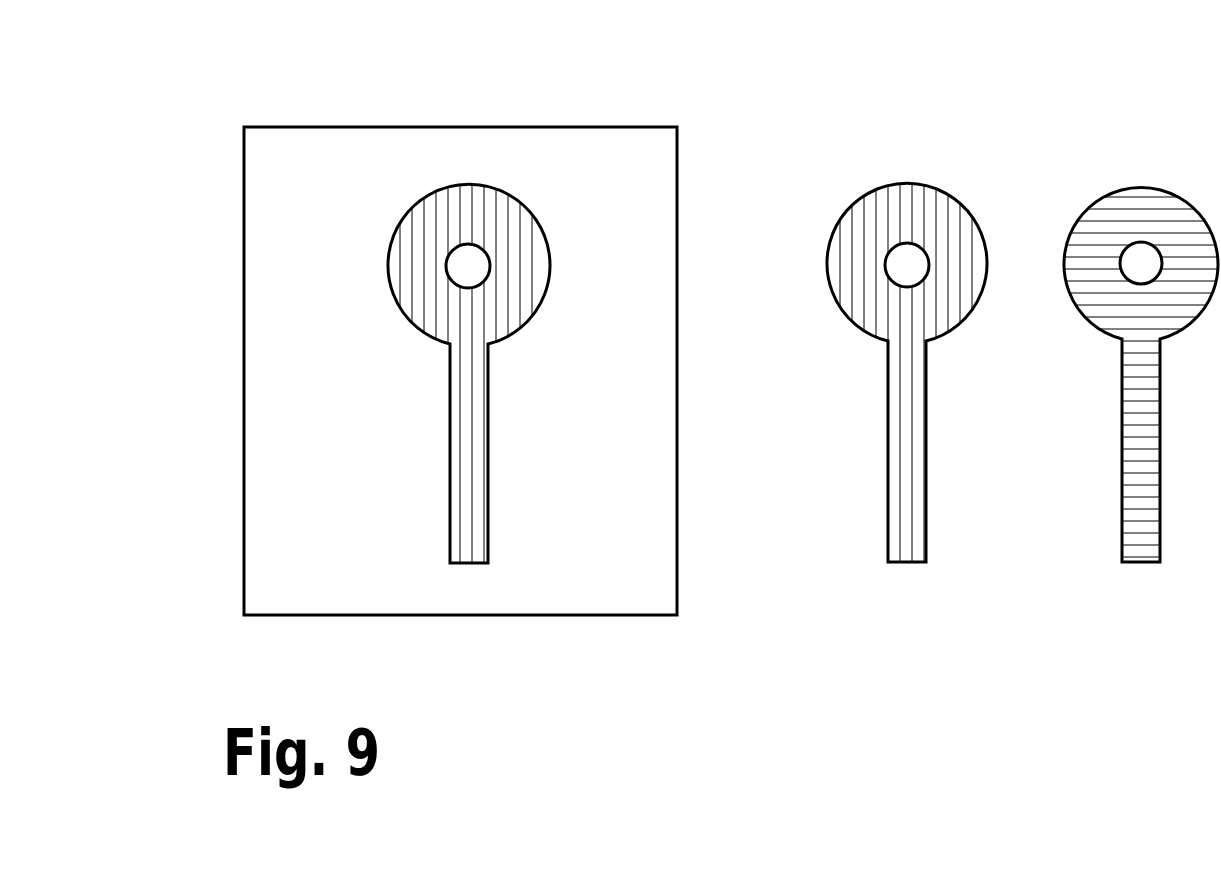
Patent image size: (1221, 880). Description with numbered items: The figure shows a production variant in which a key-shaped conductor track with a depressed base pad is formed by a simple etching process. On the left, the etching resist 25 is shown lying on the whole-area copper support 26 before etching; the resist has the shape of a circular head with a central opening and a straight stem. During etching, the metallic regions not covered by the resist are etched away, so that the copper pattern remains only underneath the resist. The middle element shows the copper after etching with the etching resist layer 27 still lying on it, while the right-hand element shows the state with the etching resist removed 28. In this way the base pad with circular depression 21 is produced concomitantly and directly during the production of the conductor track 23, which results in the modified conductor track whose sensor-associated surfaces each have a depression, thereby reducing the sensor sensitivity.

The base pad with circular depression 21 is at (987, 307).
The conductor track 23 is at (1123, 437).
The etching resist before etching 25 is at (452, 208).
The whole-area copper support 26 is at (333, 567).
The copper after etching with etching resist layer 27 is at (880, 213).
The etching resist removed 28 is at (1158, 213).